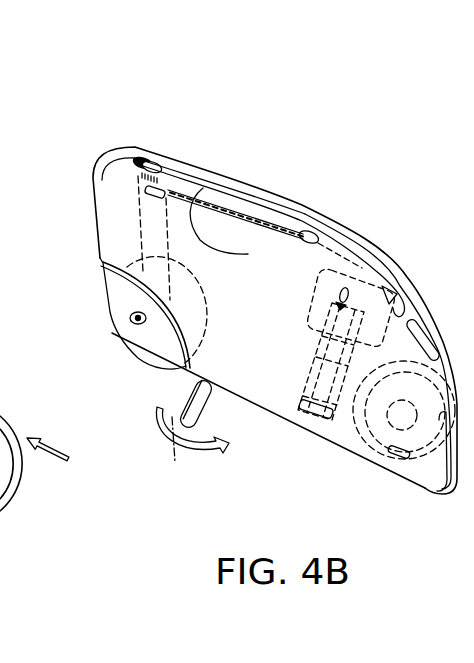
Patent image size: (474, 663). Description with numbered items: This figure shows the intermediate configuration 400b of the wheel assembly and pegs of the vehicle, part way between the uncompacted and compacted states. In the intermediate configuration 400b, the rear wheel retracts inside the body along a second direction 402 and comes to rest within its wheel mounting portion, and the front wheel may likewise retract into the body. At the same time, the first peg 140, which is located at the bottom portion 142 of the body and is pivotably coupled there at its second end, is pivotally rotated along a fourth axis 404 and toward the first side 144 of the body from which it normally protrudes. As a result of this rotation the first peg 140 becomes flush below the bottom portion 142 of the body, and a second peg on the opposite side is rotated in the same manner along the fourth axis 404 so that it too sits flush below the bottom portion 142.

The intermediate configuration 400b is at (168, 118).
The first peg 140 is at (197, 404).
The bottom portion 142 is at (312, 433).
The first side 144 is at (213, 183).
The second direction 402 is at (47, 452).
The fourth axis 404 is at (175, 455).